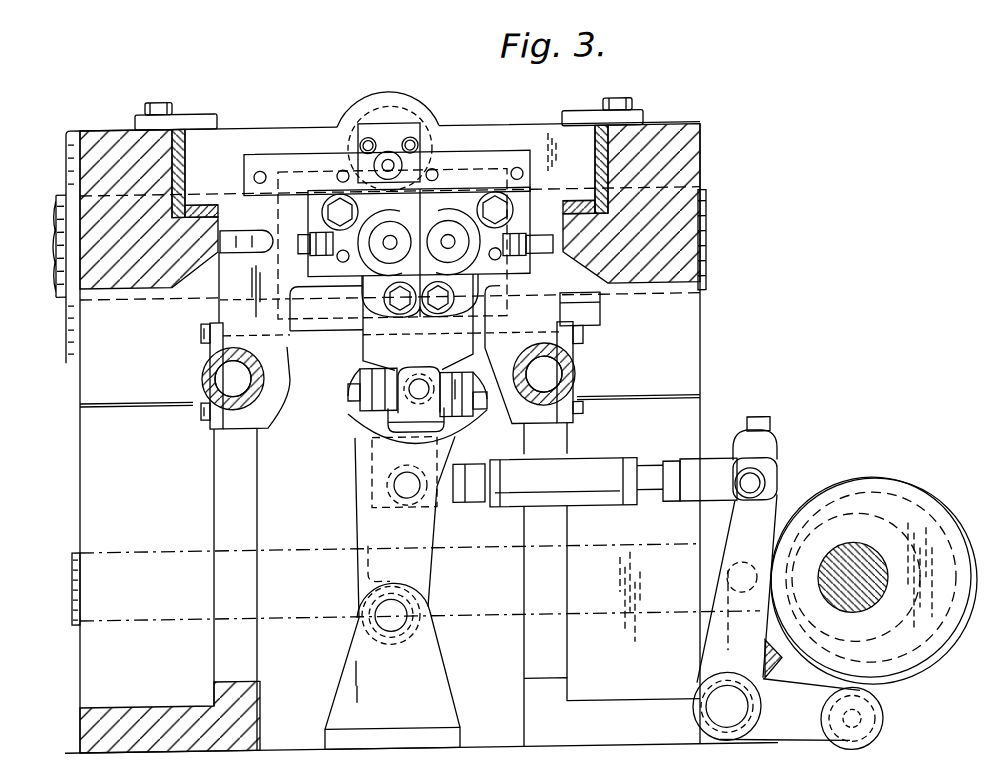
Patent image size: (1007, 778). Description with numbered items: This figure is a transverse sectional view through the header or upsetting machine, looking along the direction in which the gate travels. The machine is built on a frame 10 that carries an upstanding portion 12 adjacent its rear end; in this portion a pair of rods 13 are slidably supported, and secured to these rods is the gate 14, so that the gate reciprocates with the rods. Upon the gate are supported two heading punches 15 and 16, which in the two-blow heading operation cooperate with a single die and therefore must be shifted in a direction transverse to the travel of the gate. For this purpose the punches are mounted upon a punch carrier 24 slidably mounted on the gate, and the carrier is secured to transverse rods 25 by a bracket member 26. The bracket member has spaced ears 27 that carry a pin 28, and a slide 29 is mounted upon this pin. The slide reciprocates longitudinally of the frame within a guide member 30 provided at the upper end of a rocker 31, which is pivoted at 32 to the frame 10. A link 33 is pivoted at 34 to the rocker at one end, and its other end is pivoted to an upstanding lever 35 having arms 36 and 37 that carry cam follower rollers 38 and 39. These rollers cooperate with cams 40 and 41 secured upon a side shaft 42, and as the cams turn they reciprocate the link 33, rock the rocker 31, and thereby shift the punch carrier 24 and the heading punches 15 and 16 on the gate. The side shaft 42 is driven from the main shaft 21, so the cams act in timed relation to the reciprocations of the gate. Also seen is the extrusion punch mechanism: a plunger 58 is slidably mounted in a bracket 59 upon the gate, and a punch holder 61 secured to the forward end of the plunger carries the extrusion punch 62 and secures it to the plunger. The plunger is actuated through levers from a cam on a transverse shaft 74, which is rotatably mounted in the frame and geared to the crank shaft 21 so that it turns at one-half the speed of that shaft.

The frame 10 is at (166, 718).
The upstanding portion 12 is at (100, 381).
The rods 13 is at (202, 374).
The gate 14 is at (545, 285).
The heading punch 15 is at (388, 248).
The heading punch 16 is at (462, 254).
The main shaft 21 is at (62, 234).
The punch carrier 24 is at (309, 266).
The transverse rods 25 is at (318, 326).
The bracket member 26 is at (378, 350).
The spaced ears 27 is at (438, 387).
The pin 28 is at (417, 405).
The slide 29 is at (432, 418).
The guide member 30 is at (380, 421).
The rocker 31 is at (385, 529).
The pivot 32 is at (385, 613).
The link 33 is at (540, 478).
The pivot 34 is at (414, 494).
The upstanding lever 35 is at (740, 530).
The arm 36 is at (718, 648).
The arm 37 is at (776, 706).
The cam follower roller 38 is at (716, 580).
The cam follower roller 39 is at (876, 716).
The cam 40 is at (840, 501).
The cam 41 is at (832, 689).
The side shaft 42 is at (852, 576).
The plunger 58 is at (392, 125).
The bracket 59 is at (378, 107).
The punch holder 61 is at (398, 140).
The extrusion punch 62 is at (394, 170).
The transverse shaft 74 is at (586, 552).